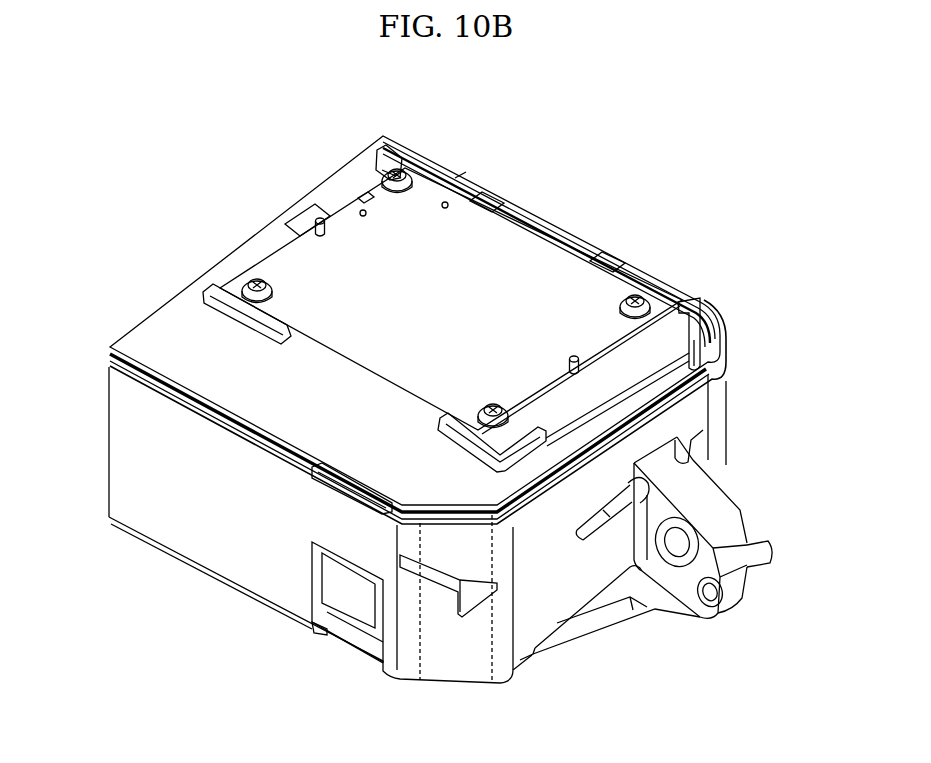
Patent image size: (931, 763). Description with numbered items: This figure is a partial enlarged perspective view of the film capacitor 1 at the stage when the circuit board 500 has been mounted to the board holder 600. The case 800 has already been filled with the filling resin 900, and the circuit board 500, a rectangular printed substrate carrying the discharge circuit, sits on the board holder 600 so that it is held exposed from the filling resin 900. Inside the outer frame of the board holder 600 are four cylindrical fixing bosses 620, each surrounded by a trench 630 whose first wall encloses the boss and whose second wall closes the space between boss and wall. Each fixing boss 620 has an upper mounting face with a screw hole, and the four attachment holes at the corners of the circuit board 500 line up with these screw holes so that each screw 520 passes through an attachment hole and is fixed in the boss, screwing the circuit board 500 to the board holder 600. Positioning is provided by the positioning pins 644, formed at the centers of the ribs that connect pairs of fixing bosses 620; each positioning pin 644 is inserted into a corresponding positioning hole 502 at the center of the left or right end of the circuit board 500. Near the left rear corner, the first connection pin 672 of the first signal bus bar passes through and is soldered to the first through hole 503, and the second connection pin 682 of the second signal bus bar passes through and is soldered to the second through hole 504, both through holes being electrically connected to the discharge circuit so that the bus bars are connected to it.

The film capacitor 1 is at (764, 200).
The filling resin 900 is at (175, 343).
The case 800 is at (210, 550).
The board holder 600 is at (522, 208).
The trench 630 is at (382, 158).
The fixing boss 620 is at (268, 332).
The circuit board 500 is at (548, 283).
The positioning hole 502 is at (316, 228).
The first through hole 503 is at (443, 210).
The second through hole 504 is at (362, 218).
The screw 520 is at (402, 172).
The positioning pin 644 is at (300, 205).
The first connection pin 672 is at (460, 175).
The second connection pin 682 is at (363, 196).